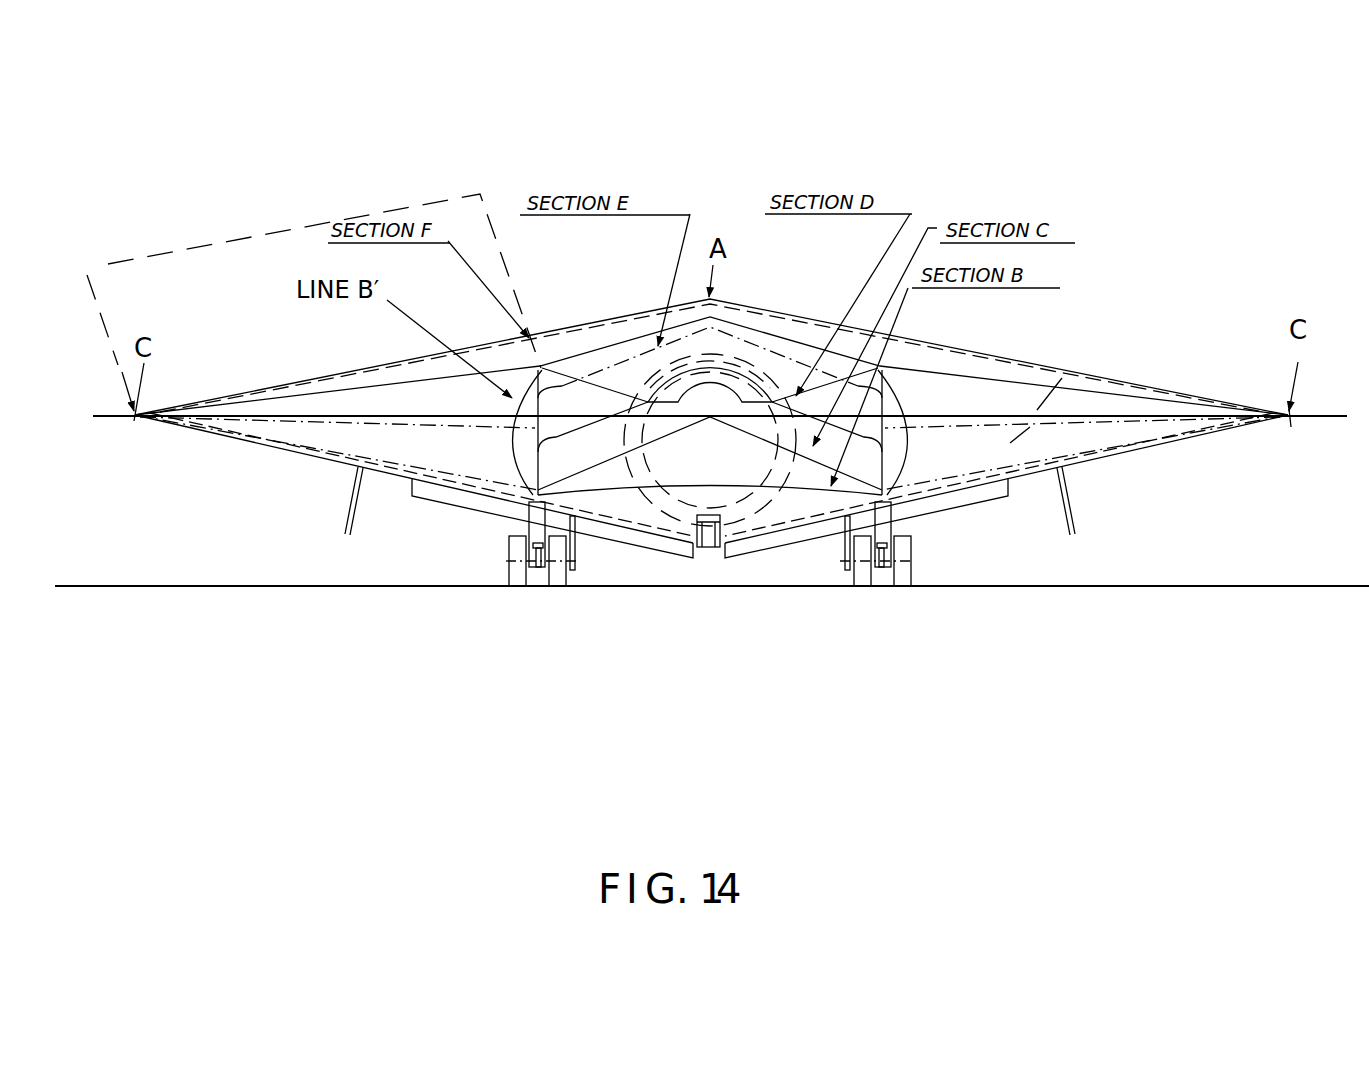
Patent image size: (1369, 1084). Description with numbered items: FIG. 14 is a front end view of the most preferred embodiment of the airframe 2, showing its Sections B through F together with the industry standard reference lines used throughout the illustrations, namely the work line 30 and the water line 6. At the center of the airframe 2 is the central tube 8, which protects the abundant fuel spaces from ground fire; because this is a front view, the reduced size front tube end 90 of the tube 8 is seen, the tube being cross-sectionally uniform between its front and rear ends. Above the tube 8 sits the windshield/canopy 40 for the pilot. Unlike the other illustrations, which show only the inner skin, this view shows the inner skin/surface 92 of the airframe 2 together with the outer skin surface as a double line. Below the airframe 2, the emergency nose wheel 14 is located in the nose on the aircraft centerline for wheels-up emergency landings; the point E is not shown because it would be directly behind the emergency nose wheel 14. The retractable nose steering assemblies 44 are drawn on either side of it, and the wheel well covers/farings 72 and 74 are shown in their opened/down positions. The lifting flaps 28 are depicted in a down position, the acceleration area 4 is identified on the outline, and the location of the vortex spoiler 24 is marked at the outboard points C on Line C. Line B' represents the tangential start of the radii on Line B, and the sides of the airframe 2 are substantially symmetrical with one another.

The airframe 2 is at (1162, 182).
The acceleration area 4 is at (264, 227).
The water line 6 is at (1257, 590).
The tube 8 is at (764, 367).
The emergency nose wheel 14 is at (710, 549).
The vortex spoiler 24 is at (133, 440).
The lifting flaps 28 is at (457, 497).
The work line 30 is at (1327, 421).
The windshield/canopy 40 is at (672, 393).
The retractable nose steering assemblies 44 is at (520, 590).
The wheel well cover/faring 72 is at (341, 518).
The wheel well cover/faring 74 is at (580, 553).
The reduced size front tube end 90 is at (746, 500).
The inner skin/surface 92 is at (1087, 378).